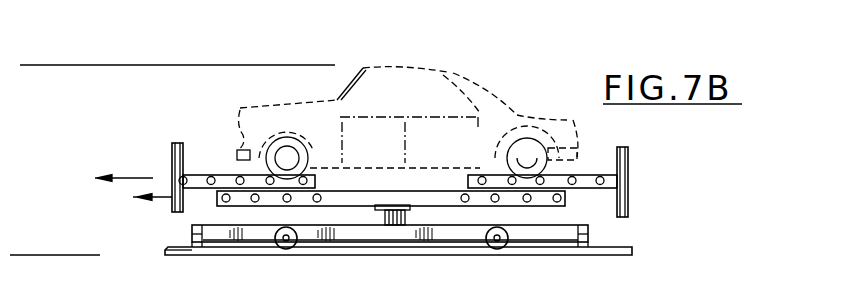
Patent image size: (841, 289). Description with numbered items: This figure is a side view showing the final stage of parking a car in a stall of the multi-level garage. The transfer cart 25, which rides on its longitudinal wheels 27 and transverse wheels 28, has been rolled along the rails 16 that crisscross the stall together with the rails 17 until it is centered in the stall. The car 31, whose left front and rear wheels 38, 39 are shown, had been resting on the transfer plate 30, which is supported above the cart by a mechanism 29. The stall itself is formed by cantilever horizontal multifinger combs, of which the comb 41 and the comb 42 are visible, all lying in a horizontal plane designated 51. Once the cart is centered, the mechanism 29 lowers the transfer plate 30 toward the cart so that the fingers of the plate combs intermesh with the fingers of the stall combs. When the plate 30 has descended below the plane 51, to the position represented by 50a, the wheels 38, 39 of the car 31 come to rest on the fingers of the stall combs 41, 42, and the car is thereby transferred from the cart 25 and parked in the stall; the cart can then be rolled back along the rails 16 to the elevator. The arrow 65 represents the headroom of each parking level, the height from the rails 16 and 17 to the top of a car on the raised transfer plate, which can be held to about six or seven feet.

The arrow 65 is at (45, 65).
The plane of the stall combs 51 is at (132, 178).
The lowered transfer plate plane 50a is at (158, 198).
The comb 41 is at (223, 177).
The comb 42 is at (585, 175).
The transfer plate 30 is at (465, 207).
The mechanism 29 is at (393, 222).
The rails 16 is at (523, 252).
The rails 17 is at (200, 250).
The longitudinal wheels 27 is at (285, 250).
The transfer cart 25 is at (258, 242).
The transverse wheels 28 is at (193, 232).
The car 31 is at (302, 104).
The front wheel 38 is at (273, 150).
The rear wheel 39 is at (530, 147).